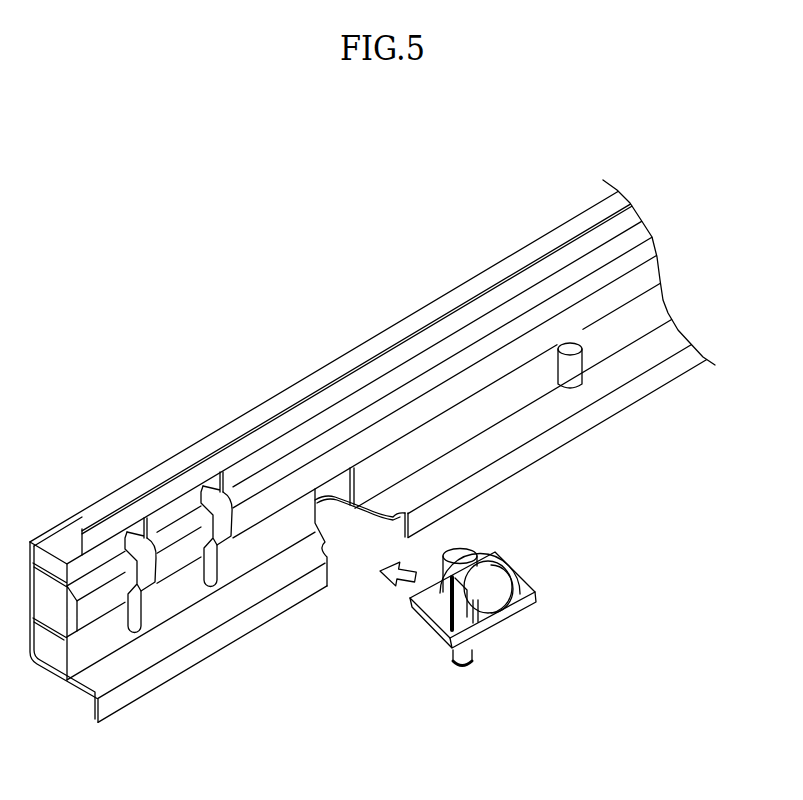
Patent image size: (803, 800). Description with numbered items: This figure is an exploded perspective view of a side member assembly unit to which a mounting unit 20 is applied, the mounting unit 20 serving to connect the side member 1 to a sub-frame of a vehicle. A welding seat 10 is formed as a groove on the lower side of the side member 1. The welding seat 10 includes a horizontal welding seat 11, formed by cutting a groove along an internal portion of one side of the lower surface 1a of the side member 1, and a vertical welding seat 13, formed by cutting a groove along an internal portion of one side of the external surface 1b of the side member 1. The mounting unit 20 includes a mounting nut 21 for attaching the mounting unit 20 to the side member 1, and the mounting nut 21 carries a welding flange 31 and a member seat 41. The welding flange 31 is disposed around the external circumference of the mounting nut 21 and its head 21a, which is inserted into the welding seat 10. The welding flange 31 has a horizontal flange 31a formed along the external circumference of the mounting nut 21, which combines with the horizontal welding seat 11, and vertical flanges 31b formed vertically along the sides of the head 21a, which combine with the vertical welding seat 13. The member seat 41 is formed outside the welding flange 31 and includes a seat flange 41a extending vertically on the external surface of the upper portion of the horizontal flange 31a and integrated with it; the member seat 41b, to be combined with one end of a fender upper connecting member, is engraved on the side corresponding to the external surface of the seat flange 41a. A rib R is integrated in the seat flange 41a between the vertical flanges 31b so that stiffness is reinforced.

The side member 1 is at (237, 419).
The lower surface 1a is at (222, 603).
The external surface 1b is at (264, 541).
The welding seat 10 is at (390, 584).
The horizontal welding seat 11 is at (372, 514).
The vertical welding seat 13 is at (327, 586).
The mounting unit 20 is at (550, 593).
The mounting nut 21 is at (478, 619).
The head 21a is at (465, 553).
The welding flange 31 is at (463, 623).
The horizontal flange 31a is at (450, 605).
The vertical flanges 31b is at (455, 628).
The member seat 41 is at (534, 609).
The seat flange 41a is at (516, 571).
The member seat 41b is at (497, 597).
The rib R is at (472, 667).